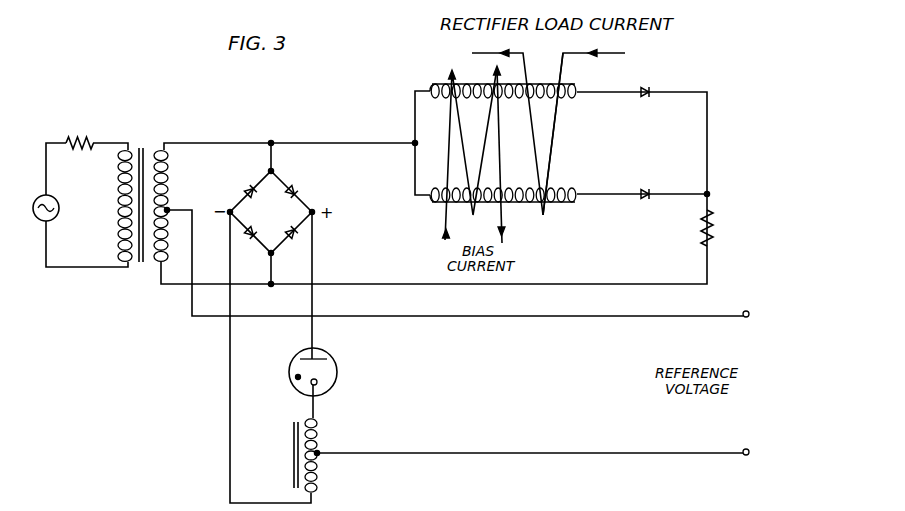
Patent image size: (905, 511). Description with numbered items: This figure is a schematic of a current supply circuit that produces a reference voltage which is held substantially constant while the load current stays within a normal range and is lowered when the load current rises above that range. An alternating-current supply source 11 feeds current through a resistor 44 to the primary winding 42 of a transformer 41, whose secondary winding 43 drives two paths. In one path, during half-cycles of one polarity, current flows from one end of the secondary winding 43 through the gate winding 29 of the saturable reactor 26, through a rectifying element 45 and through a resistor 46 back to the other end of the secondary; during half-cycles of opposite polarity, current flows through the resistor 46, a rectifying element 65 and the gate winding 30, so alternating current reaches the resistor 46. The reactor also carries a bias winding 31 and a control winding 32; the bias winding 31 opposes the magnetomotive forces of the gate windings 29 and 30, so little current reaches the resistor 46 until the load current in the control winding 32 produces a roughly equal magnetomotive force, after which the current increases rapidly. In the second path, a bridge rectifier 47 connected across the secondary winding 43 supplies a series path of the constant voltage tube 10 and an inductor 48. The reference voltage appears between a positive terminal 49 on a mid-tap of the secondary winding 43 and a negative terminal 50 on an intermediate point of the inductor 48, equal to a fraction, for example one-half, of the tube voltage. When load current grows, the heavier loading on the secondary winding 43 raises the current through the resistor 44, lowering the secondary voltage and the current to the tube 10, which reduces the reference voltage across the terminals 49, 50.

The constant voltage tube 10 is at (337, 373).
The alternating-current supply source 11 is at (40, 223).
The saturable inductance device 26 is at (517, 147).
The gate winding 29 is at (490, 84).
The gate winding 30 is at (510, 204).
The bias winding 31 is at (500, 130).
The control winding 32 is at (552, 145).
The transformer 41 is at (142, 143).
The primary winding 42 is at (118, 212).
The secondary winding 43 is at (168, 186).
The resistor 44 is at (72, 141).
The rectifying element 45 is at (649, 86).
The resistor 46 is at (714, 230).
The bridge rectifier 47 is at (271, 212).
The inductor 48 is at (320, 478).
The positive terminal 49 is at (749, 317).
The negative terminal 50 is at (749, 449).
The rectifying element 65 is at (644, 200).